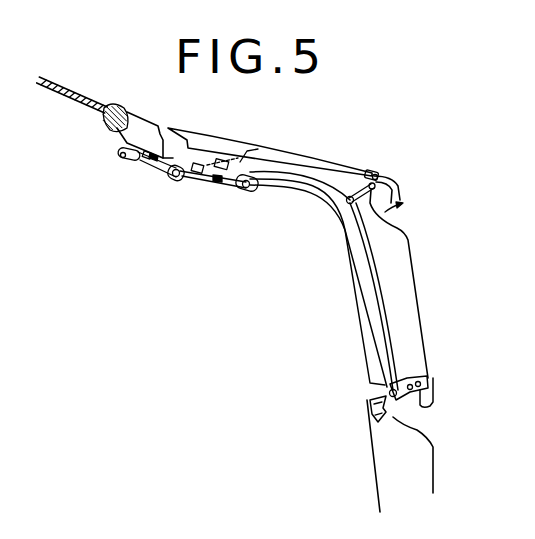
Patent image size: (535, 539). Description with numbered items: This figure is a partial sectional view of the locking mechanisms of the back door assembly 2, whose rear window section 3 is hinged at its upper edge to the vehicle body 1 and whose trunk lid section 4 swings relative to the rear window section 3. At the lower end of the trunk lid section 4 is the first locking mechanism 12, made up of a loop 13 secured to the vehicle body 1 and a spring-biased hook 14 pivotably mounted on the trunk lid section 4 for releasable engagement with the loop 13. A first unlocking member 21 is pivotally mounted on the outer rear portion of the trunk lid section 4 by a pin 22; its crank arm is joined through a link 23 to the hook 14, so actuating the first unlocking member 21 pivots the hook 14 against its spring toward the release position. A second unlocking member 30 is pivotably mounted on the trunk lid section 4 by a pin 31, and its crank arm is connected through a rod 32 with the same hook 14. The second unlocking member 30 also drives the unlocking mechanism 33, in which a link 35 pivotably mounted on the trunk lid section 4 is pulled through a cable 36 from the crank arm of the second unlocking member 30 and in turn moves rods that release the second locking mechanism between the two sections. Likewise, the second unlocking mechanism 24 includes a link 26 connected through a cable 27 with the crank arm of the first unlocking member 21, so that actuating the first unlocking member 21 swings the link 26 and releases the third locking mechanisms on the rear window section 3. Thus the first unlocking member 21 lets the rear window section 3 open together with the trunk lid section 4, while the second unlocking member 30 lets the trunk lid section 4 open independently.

The vehicle body 1 is at (388, 488).
The back door assembly 2 is at (90, 77).
The rear window section 3 is at (109, 102).
The trunk lid section 4 is at (312, 150).
The first locking mechanism 12 is at (400, 418).
The loop 13 is at (365, 403).
The hook 14 is at (400, 410).
The first unlocking member 21 is at (435, 400).
The pin 22 is at (430, 384).
The link 23 is at (400, 383).
The second unlocking mechanism 24 is at (137, 171).
The link 26 is at (176, 179).
The cable 27 is at (383, 280).
The second unlocking member 30 is at (400, 188).
The pin 31 is at (375, 172).
The rod 32 is at (377, 300).
The unlocking mechanism 33 is at (221, 182).
The link 35 is at (250, 192).
The cable 36 is at (331, 178).